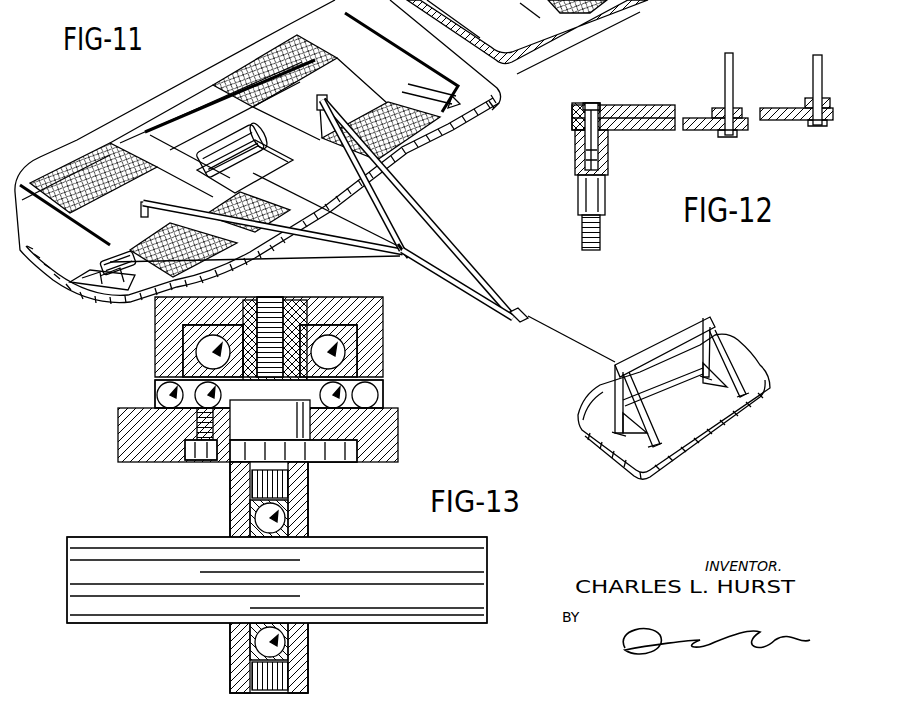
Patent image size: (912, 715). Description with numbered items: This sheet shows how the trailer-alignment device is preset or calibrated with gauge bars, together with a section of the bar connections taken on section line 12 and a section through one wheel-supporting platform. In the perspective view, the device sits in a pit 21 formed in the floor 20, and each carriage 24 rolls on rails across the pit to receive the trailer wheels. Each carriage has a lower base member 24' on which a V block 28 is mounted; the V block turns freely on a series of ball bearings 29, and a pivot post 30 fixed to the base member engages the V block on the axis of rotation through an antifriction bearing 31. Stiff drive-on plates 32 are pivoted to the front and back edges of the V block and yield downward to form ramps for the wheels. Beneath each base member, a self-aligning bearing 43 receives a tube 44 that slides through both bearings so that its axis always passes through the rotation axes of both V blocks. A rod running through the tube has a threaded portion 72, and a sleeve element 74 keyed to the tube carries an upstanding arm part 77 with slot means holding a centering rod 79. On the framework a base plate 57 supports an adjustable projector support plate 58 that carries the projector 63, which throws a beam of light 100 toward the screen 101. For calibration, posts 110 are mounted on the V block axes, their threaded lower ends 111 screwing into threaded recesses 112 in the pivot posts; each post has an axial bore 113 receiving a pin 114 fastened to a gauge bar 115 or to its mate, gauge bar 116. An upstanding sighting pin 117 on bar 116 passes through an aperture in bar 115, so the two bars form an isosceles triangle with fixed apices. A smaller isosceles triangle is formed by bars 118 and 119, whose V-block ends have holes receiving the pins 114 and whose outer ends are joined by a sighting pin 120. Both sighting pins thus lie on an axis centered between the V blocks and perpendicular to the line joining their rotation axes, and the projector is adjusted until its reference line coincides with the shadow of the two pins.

In FIG. 11, the platform frame 12 is at (148, 184).
In FIG. 11, the floor 20 is at (240, 46).
In FIG. 11, the pit 21 is at (541, 20).
In FIG. 11, the carriage 24 is at (217, 95).
In FIG. 13, the base member 24' is at (277, 418).
In FIG. 11, the V block 28 is at (320, 91).
In FIG. 13, the V block 28 is at (160, 328).
In FIG. 13, the ball bearings 29 is at (158, 384).
In FIG. 13, the pivot post 30 is at (294, 430).
In FIG. 13, the antifriction bearing 31 is at (335, 350).
In FIG. 11, the drive-on plate 32 is at (64, 165).
In FIG. 13, the self-aligning bearing 43 is at (308, 482).
In FIG. 11, the tube 44 is at (106, 252).
In FIG. 13, the tube 44 is at (392, 548).
In FIG. 11, the base plate 57 is at (148, 133).
In FIG. 11, the projector support plate 58 is at (178, 142).
In FIG. 11, the projector 63 is at (210, 150).
In FIG. 11, the threaded portion 72 is at (418, 88).
In FIG. 11, the sleeve element 74 is at (387, 87).
In FIG. 11, the arm part 77 is at (104, 282).
In FIG. 11, the centering rod 79 is at (84, 282).
In FIG. 11, the beam of light 100 is at (584, 338).
In FIG. 11, the screen 101 is at (600, 385).
In FIG. 11, the post 110 is at (140, 212).
In FIG. 12, the post 110 is at (608, 188).
In FIG. 12, the threaded lower end 111 is at (582, 226).
In FIG. 13, the threaded recess 112 is at (273, 300).
In FIG. 12, the axial bore 113 is at (600, 153).
In FIG. 12, the pin 114 is at (585, 150).
In FIG. 11, the gauge bar 115 is at (450, 240).
In FIG. 12, the gauge bar 115 is at (805, 100).
In FIG. 11, the gauge bar 116 is at (424, 292).
In FIG. 12, the gauge bar 116 is at (616, 108).
In FIG. 11, the sighting pin 117 is at (515, 306).
In FIG. 12, the sighting pin 117 is at (817, 58).
In FIG. 11, the bar 118 is at (402, 196).
In FIG. 12, the bar 118 is at (712, 110).
In FIG. 11, the bar 119 is at (360, 249).
In FIG. 12, the bar 119 is at (575, 120).
In FIG. 11, the sighting pin 120 is at (430, 216).
In FIG. 12, the sighting pin 120 is at (733, 72).